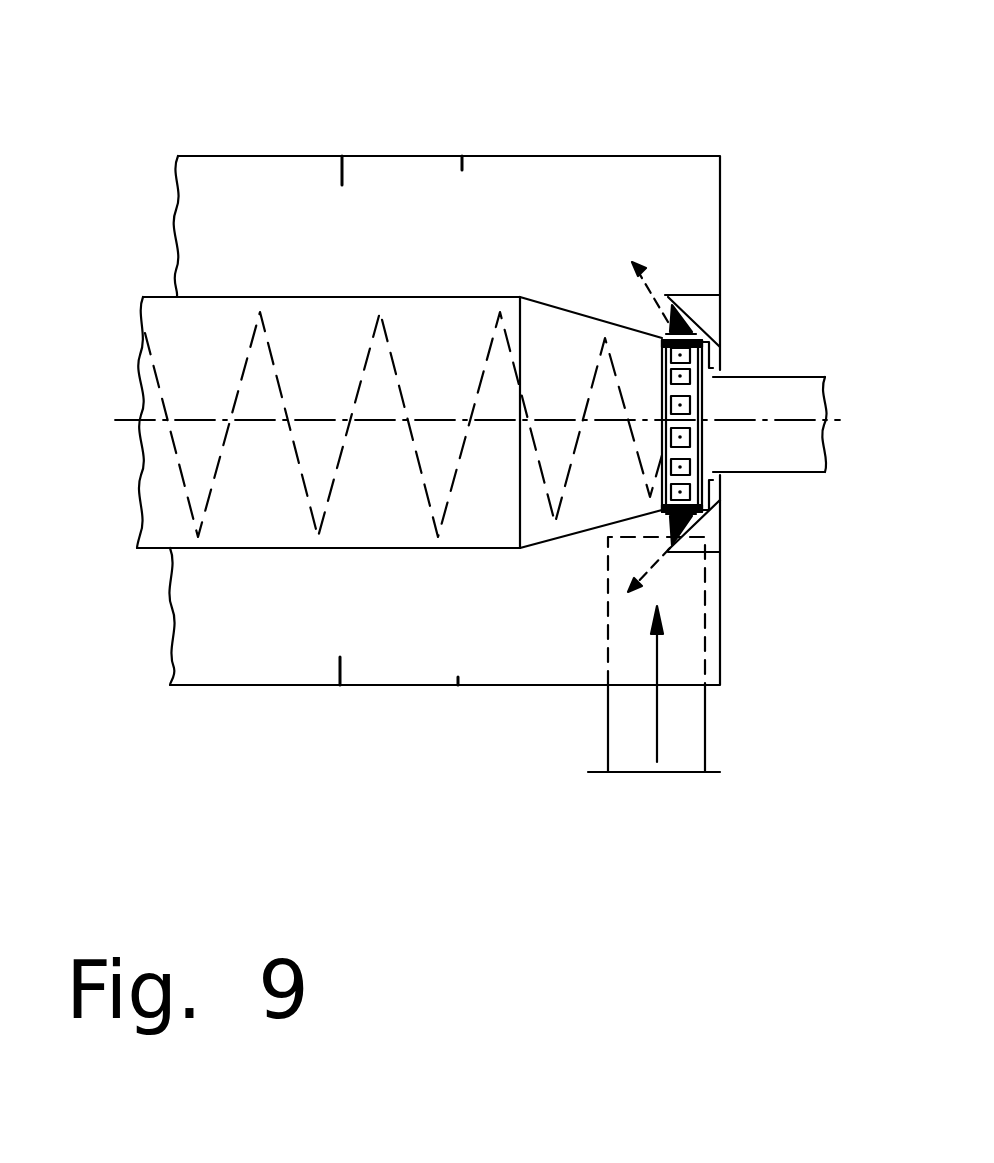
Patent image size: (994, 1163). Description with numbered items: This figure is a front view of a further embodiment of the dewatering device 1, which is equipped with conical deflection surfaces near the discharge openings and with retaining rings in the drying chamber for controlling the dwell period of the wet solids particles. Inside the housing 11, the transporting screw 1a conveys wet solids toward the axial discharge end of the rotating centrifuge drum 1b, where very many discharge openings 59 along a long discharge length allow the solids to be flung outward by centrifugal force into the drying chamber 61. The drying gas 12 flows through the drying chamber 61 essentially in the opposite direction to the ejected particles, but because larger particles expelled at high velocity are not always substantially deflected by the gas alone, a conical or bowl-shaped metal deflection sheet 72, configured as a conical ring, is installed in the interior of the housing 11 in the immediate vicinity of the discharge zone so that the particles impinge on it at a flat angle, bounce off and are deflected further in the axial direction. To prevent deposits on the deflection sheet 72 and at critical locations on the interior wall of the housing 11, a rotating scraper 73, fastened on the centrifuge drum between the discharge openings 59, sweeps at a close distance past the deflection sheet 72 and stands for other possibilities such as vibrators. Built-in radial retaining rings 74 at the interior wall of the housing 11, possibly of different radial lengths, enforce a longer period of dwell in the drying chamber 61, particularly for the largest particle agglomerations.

The dewatering device 1 is at (146, 296).
The transporting screw 1a is at (178, 470).
The centrifuge drum 1b is at (247, 548).
The housing 11 is at (530, 157).
The drying gas 12 is at (660, 708).
The discharge openings 59 is at (680, 437).
The drying chamber 61 is at (268, 225).
The metal deflection sheet 72 is at (680, 312).
The rotating scraper 73 is at (668, 318).
The radial retaining rings 74 is at (462, 166).